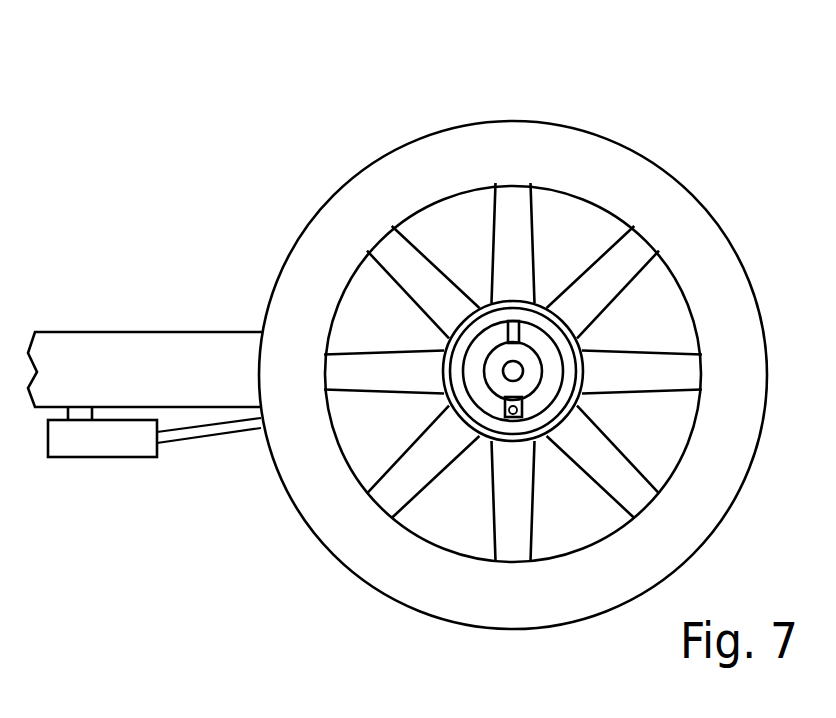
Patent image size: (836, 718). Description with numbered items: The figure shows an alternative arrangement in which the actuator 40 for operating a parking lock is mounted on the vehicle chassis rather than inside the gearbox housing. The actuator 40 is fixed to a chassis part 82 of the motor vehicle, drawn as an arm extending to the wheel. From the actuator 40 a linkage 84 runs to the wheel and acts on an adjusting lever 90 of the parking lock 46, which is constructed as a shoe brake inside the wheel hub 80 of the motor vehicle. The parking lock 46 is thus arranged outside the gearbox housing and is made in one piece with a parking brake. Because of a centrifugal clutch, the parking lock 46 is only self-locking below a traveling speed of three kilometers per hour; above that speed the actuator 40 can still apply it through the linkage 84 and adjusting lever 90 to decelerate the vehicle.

The actuator 40 is at (120, 447).
The parking lock 46 is at (565, 345).
The wheel hub 80 is at (545, 303).
The chassis part 82 is at (145, 348).
The linkage 84 is at (220, 428).
The adjusting lever 90 is at (505, 335).